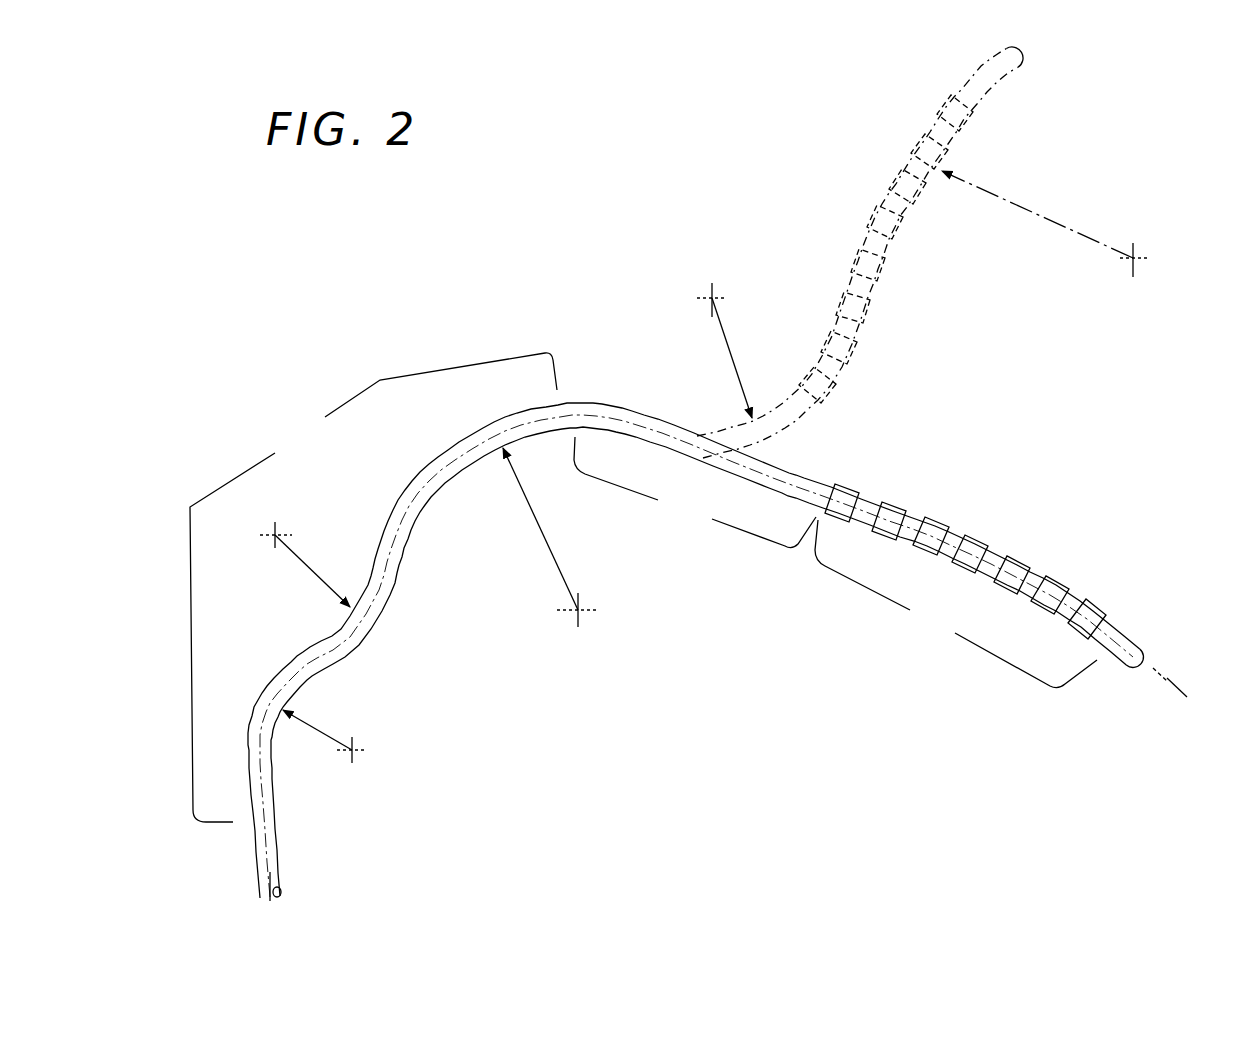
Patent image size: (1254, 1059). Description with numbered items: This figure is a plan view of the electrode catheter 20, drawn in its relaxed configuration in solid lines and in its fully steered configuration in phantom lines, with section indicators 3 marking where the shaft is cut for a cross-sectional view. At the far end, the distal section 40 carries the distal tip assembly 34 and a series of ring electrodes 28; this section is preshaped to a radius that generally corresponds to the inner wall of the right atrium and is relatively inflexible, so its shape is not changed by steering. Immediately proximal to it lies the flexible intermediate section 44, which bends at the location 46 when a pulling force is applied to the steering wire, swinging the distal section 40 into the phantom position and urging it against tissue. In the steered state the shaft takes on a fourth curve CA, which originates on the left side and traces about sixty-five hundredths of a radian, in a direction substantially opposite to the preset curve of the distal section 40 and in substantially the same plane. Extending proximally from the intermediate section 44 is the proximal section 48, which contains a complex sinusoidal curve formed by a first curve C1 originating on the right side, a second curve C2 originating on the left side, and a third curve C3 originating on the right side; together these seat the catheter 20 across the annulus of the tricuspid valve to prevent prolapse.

The electrode catheter 20 is at (575, 258).
The ring electrodes 28 is at (933, 530).
The distal tip assembly 34 is at (1138, 640).
The distal section 40 is at (956, 604).
The flexible intermediate section 44 is at (695, 492).
The bend location 46 is at (757, 420).
The proximal section 48 is at (373, 587).
The first curve C1 is at (289, 700).
The second curve C2 is at (350, 622).
The third curve C3 is at (463, 467).
The fourth curve CA is at (715, 424).
The section line 3 is at (274, 875).